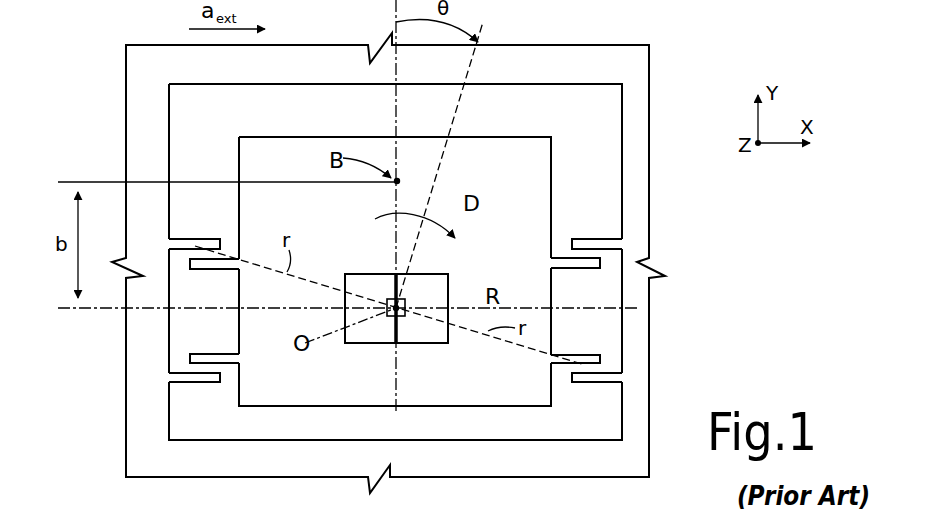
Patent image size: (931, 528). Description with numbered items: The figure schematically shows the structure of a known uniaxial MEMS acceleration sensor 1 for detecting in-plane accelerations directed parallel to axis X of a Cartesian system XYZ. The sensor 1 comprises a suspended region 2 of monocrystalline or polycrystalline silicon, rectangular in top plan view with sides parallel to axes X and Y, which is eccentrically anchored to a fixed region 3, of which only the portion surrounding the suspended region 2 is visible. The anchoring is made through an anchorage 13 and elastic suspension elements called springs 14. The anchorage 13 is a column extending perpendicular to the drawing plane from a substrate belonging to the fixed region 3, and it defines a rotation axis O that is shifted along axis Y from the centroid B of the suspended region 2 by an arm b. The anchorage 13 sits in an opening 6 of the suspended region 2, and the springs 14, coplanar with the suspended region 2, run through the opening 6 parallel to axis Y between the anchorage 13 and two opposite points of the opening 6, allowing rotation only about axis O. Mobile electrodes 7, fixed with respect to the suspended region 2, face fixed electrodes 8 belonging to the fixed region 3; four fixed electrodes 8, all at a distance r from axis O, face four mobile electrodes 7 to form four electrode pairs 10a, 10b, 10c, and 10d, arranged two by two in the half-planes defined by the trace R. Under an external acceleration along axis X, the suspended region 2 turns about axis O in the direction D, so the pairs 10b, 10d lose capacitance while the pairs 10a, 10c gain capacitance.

The sensor 1 is at (358, 261).
The suspended region 2 is at (512, 181).
The fixed region 3 is at (580, 467).
The opening 6 is at (437, 333).
The mobile electrodes 7 is at (212, 269).
The fixed electrodes 8 is at (192, 241).
The electrode pair 10a is at (192, 278).
The electrode pair 10b is at (610, 231).
The electrode pair 10c is at (630, 370).
The electrode pair 10d is at (163, 373).
The anchorage 13 is at (404, 304).
The springs 14 is at (395, 298).